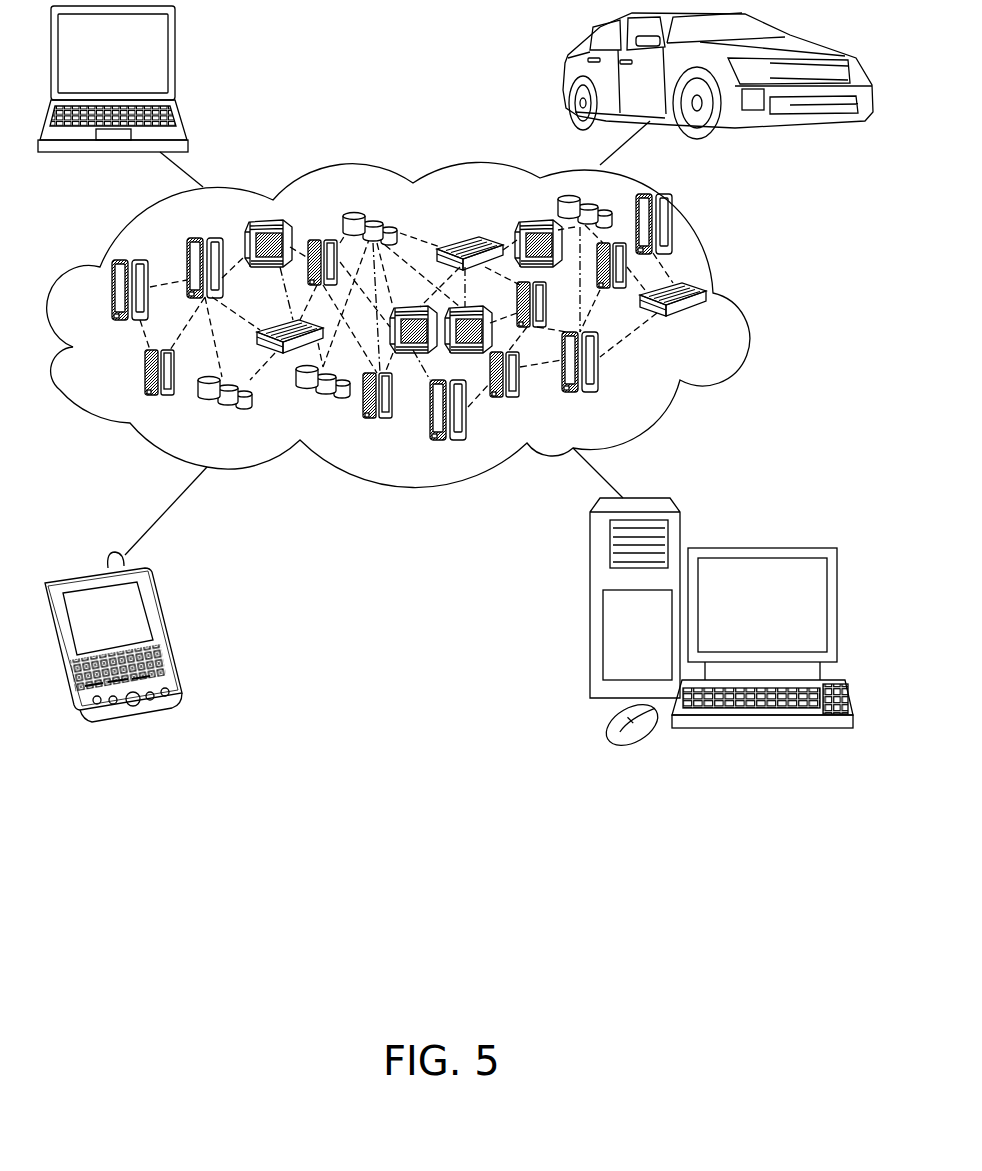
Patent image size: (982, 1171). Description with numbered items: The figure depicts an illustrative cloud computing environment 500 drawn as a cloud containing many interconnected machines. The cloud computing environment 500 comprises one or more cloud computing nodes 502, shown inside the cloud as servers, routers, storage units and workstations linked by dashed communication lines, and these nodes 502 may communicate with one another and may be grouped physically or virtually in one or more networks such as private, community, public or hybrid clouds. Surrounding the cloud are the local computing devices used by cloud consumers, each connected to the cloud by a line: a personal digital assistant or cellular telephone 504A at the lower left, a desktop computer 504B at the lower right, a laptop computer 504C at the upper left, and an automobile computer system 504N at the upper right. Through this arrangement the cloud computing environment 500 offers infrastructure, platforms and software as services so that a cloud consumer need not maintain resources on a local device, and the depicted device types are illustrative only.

The cloud computing environment 500 is at (713, 293).
The cloud computing nodes 502 is at (706, 324).
The personal digital assistant (PDA) or cellular telephone 504A is at (157, 600).
The desktop computer 504B is at (750, 548).
The laptop computer 504C is at (176, 37).
The automobile computer system 504N is at (567, 75).